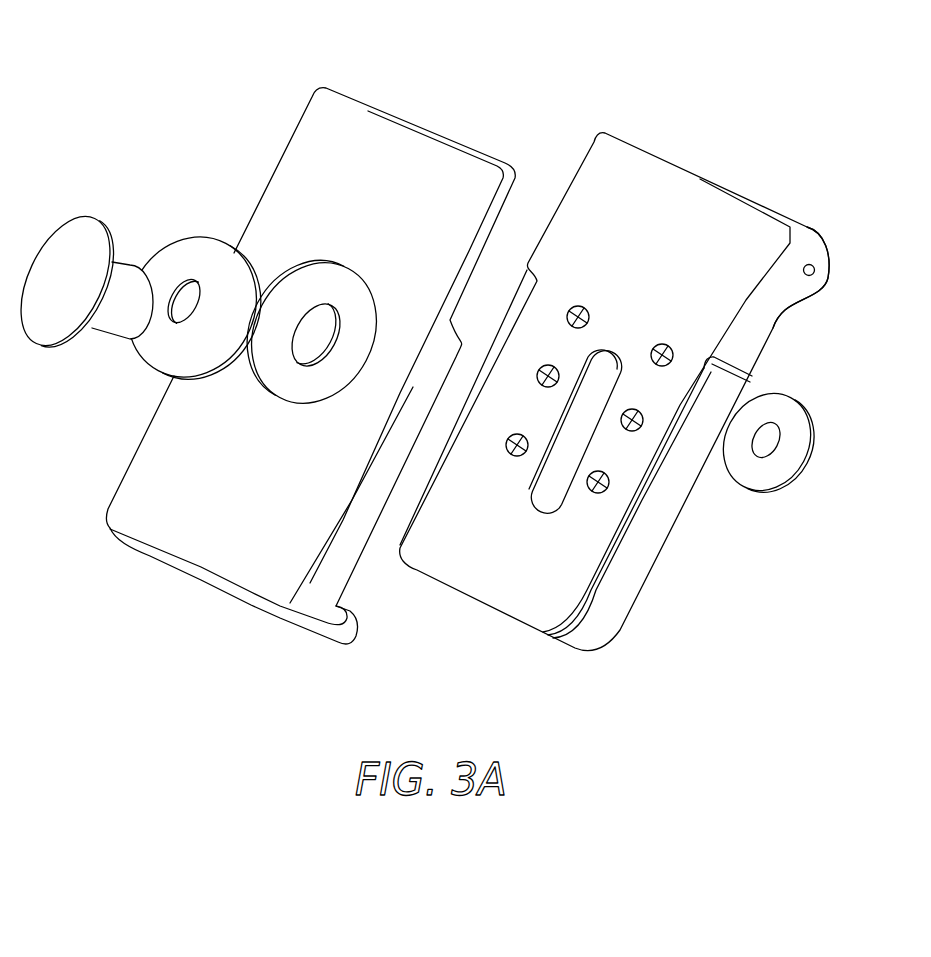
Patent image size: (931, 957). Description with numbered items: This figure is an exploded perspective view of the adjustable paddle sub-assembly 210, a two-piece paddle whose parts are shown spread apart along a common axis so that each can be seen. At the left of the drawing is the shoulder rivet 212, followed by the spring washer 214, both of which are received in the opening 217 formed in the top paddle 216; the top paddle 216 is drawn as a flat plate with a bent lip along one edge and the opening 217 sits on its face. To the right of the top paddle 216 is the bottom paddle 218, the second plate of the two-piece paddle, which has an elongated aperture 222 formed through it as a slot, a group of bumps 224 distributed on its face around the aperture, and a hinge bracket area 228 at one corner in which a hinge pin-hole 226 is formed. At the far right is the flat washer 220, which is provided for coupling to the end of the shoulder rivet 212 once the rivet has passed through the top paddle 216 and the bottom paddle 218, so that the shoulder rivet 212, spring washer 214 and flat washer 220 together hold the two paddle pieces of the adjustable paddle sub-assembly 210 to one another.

The adjustable paddle sub-assembly 210 is at (421, 378).
The shoulder rivet 212 is at (90, 243).
The spring washer 214 is at (200, 268).
The top paddle 216 is at (330, 107).
The opening 217 is at (320, 320).
The bottom paddle 218 is at (603, 143).
The flat washer 220 is at (757, 407).
The elongated aperture 222 is at (548, 490).
The bumps 224 is at (603, 492).
The hinge pin-hole 226 is at (812, 265).
The hinge bracket area 228 is at (790, 243).